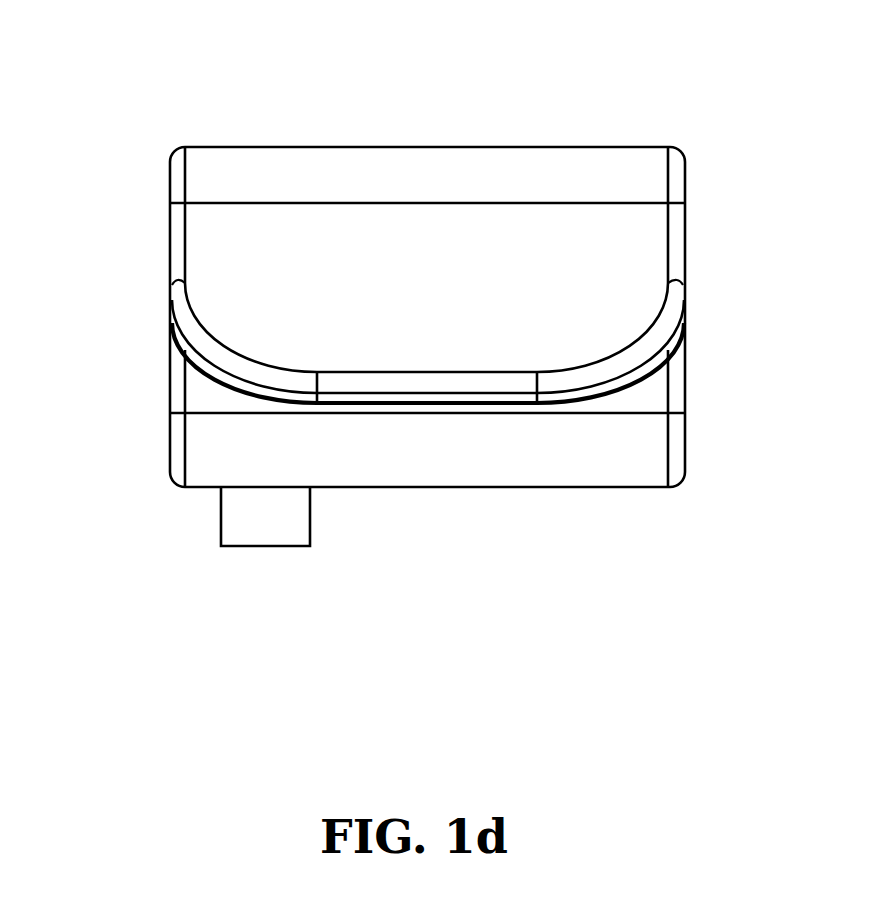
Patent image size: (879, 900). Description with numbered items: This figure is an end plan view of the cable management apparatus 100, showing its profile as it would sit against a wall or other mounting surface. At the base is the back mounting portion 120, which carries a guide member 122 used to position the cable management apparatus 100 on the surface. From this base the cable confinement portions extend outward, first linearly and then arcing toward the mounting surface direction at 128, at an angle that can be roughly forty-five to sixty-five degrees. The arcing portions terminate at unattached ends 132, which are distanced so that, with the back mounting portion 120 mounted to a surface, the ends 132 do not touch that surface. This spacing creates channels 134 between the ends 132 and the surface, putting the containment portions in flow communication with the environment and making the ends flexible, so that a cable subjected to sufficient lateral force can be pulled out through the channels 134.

The cable management apparatus 100 is at (602, 117).
The back mounting portion 120 is at (648, 473).
The guide member 122 is at (295, 534).
The arc toward mounting surface direction 128 is at (657, 165).
The unattached ends 132 is at (418, 378).
The channels 134 is at (128, 462).